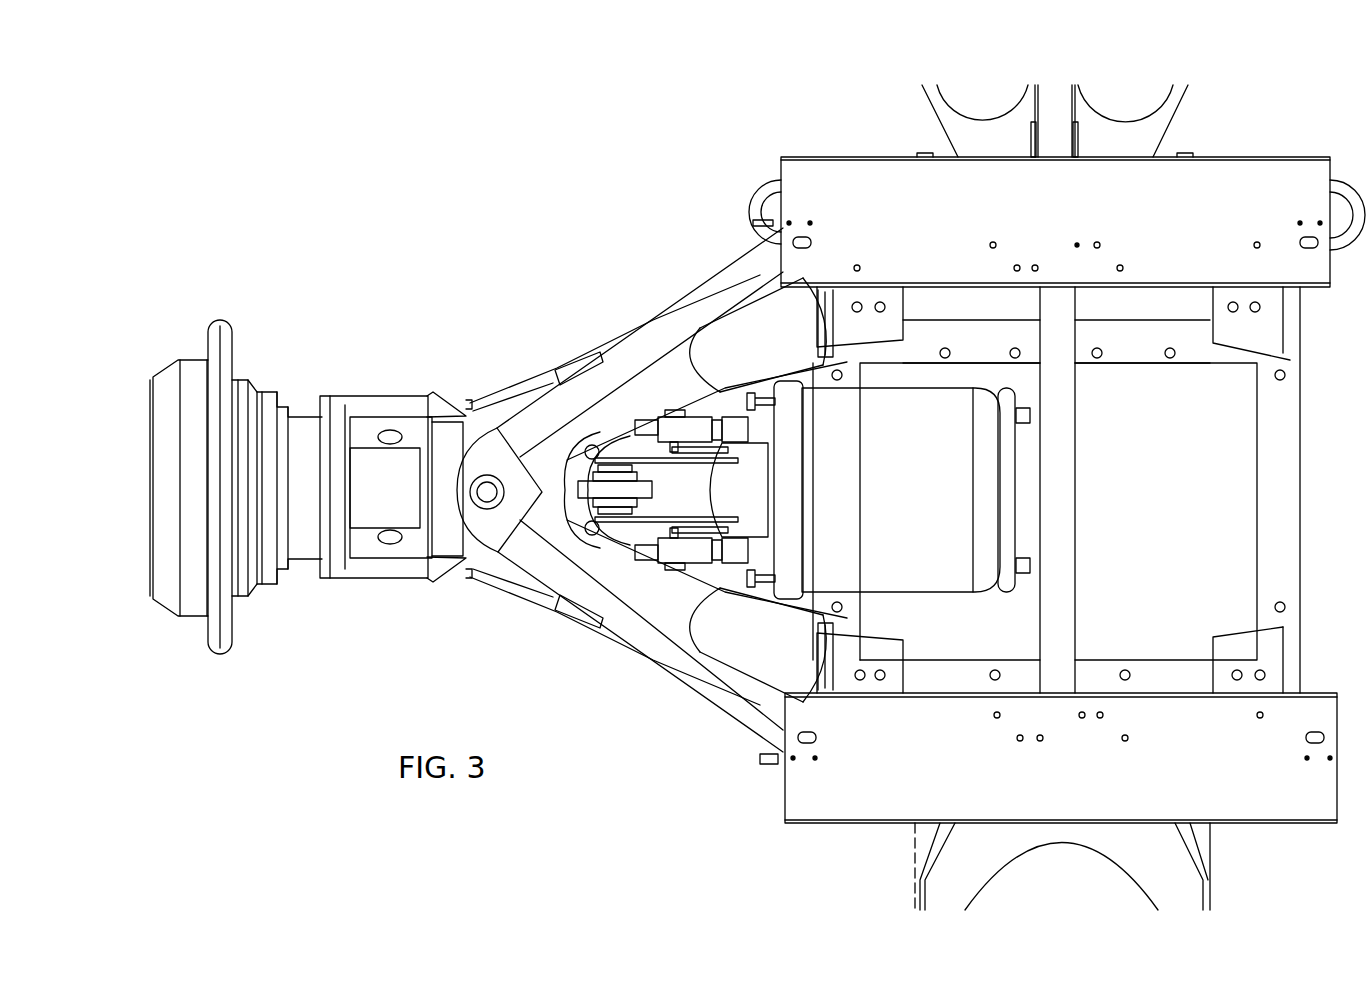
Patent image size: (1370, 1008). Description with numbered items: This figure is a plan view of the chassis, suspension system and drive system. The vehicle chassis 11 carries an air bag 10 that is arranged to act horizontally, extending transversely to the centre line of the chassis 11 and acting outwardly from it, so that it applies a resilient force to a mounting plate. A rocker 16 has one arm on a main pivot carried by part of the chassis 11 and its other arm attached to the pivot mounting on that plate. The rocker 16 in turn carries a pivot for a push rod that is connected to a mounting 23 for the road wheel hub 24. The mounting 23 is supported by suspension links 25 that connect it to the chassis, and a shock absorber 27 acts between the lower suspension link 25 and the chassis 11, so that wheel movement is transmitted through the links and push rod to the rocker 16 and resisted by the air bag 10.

The air bag 10 is at (925, 575).
The vehicle chassis 11 is at (1050, 573).
The rocker 16 is at (685, 493).
The mounting 23 is at (390, 562).
The road wheel hub 24 is at (232, 650).
The suspension links 25 is at (663, 327).
The shock absorber 27 is at (733, 340).